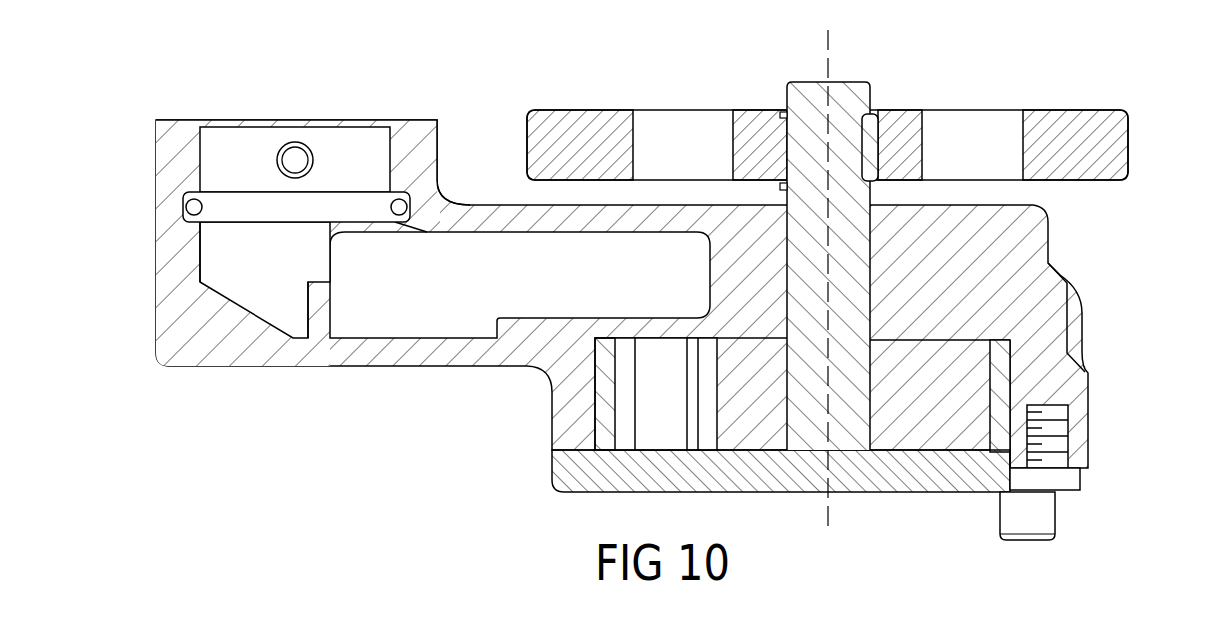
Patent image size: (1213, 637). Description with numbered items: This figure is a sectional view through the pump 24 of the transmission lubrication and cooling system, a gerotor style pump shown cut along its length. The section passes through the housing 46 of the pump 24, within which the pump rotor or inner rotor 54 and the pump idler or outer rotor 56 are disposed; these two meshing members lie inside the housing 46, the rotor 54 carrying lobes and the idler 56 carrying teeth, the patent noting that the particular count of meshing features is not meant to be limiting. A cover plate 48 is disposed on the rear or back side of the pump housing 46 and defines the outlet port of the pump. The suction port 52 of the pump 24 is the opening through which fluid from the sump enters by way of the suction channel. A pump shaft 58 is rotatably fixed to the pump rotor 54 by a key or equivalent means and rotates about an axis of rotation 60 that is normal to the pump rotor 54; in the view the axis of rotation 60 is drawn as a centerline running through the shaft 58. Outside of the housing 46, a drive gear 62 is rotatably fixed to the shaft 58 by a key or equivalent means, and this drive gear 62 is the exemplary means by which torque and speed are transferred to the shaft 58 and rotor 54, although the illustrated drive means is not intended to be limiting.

The pump 24 is at (447, 366).
The housing 46 is at (258, 365).
The cover plate 48 is at (850, 494).
The suction port 52 is at (296, 121).
The pump rotor 54 is at (937, 452).
The pump idler 56 is at (998, 458).
The pump shaft 58 is at (848, 82).
The axis of rotation 60 is at (824, 60).
The drive gear 62 is at (1130, 150).